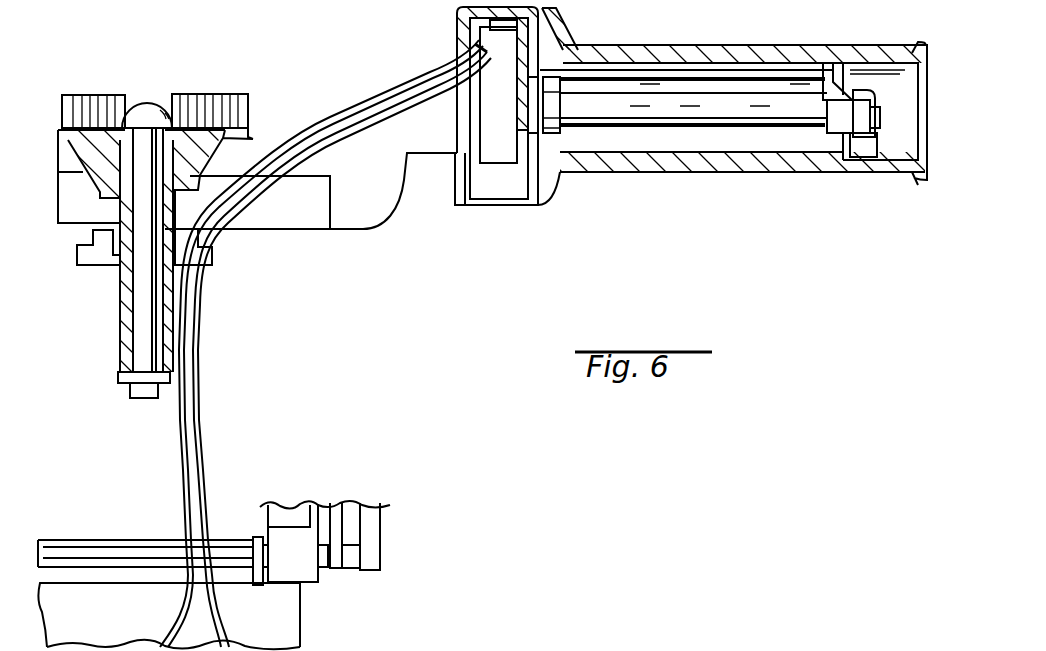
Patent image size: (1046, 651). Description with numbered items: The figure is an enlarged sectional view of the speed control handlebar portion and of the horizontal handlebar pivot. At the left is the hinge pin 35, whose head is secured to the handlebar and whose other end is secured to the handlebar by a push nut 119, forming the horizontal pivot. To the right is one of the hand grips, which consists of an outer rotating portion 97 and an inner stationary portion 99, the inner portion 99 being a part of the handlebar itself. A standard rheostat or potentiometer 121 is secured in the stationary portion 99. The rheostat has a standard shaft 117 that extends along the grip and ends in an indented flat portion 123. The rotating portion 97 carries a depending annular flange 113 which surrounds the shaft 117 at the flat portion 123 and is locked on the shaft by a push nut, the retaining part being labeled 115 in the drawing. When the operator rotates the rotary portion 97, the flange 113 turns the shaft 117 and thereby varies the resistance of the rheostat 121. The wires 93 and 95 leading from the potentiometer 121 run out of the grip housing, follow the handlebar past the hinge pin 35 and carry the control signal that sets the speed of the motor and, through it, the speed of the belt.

The hinge pin 35 is at (140, 295).
The push nut 119 is at (143, 387).
The wire 93 is at (320, 138).
The wire 95 is at (374, 97).
The outer rotating portion 97 is at (738, 55).
The inner stationary portion 99 is at (657, 66).
The depending annular flange 113 is at (858, 103).
The nut 115 is at (865, 130).
The shaft 117 is at (790, 103).
The rheostat 121 is at (490, 150).
The indented flat portion 123 is at (832, 95).